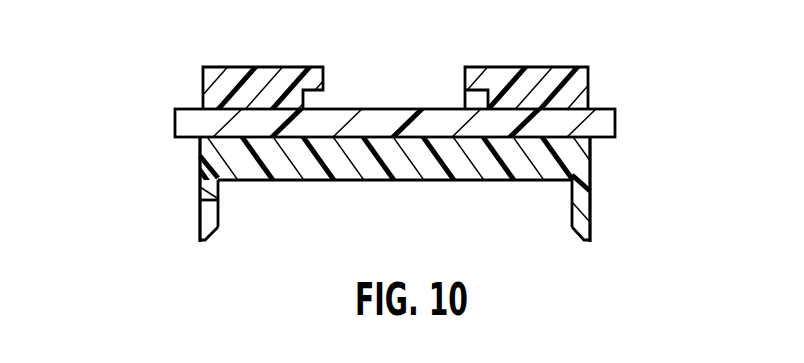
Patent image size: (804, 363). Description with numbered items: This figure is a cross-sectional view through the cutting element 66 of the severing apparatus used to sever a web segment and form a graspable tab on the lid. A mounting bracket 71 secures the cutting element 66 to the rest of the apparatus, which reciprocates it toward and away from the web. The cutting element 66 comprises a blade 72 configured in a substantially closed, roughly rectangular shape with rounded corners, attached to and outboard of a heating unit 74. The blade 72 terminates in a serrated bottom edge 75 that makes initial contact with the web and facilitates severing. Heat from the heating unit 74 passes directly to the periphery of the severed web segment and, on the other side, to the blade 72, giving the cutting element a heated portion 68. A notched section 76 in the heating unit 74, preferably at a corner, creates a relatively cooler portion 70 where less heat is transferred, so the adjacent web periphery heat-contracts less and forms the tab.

The cutting element 66 is at (170, 88).
The heated portion 68 is at (610, 182).
The relatively cooler portion 70 is at (185, 218).
The mounting bracket 71 is at (588, 82).
The blade 72 is at (200, 164).
The heating unit 74 is at (572, 196).
The serrated bottom edge 75 is at (200, 243).
The notched section 76 is at (215, 216).